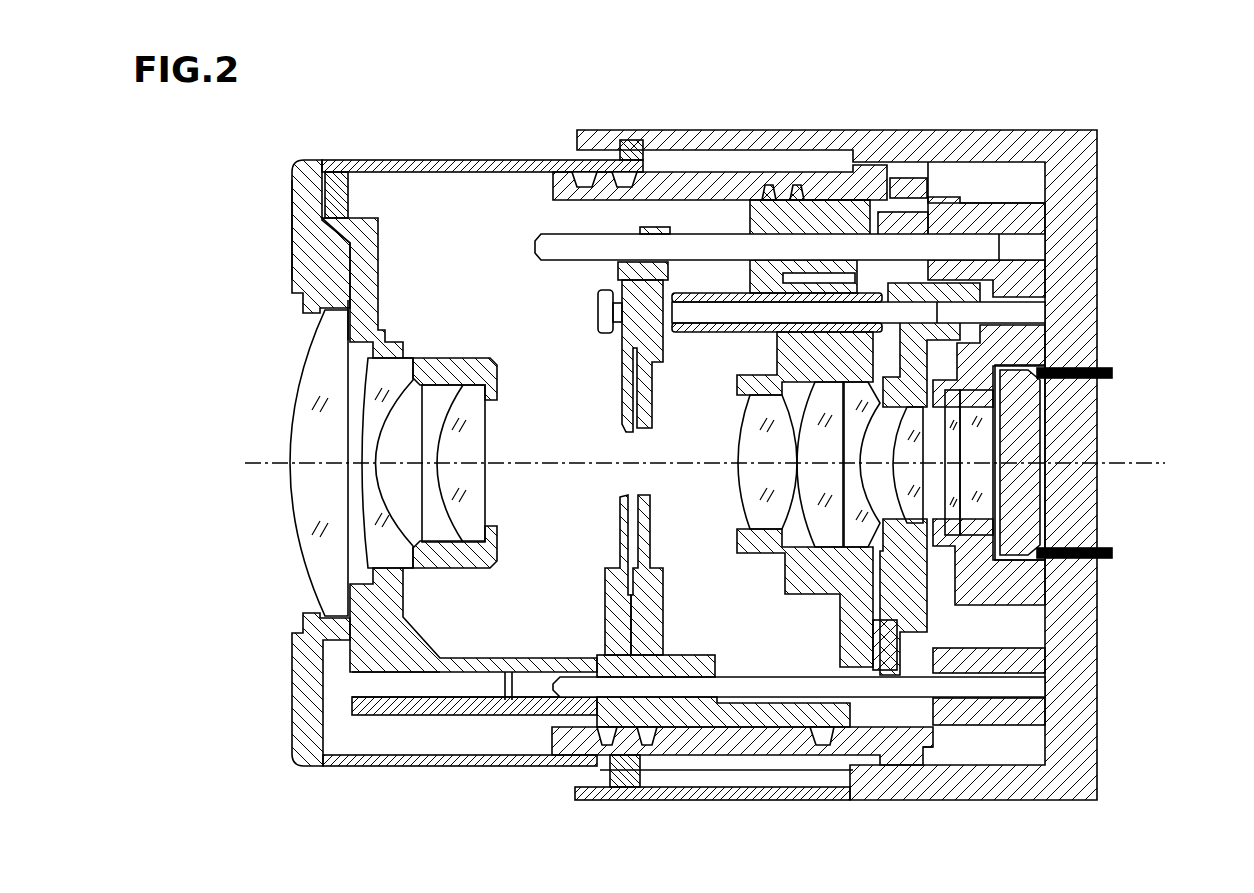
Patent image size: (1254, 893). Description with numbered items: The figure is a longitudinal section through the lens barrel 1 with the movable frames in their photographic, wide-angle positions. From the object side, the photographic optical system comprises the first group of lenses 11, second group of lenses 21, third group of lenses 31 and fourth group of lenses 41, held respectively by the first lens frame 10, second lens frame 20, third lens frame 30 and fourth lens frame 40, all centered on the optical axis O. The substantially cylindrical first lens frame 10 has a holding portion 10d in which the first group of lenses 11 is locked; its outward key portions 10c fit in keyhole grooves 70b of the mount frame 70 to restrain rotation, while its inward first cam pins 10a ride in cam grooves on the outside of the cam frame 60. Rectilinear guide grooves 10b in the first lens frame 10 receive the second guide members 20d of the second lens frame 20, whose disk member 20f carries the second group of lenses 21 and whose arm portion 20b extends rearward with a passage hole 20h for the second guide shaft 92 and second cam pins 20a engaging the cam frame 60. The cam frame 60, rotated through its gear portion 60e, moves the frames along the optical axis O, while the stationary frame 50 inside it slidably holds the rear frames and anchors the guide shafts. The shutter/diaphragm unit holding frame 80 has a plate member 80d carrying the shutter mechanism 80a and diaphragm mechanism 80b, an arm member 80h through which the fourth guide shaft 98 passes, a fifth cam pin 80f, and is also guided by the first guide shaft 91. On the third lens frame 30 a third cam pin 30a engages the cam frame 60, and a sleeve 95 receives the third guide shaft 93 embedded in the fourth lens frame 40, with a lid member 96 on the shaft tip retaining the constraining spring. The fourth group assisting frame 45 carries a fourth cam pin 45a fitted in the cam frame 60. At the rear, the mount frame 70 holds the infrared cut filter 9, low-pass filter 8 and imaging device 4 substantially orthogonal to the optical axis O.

The lens barrel 1 is at (1132, 131).
The imaging device 4 is at (1030, 446).
The low-pass filter 8 is at (985, 440).
The infrared cut filter 9 is at (1020, 385).
The first lens frame 10 is at (294, 208).
The first cam pins 10a is at (592, 185).
The rectilinear guide grooves 10b is at (432, 168).
The key portions 10c is at (626, 158).
The holding portion 10d is at (296, 230).
The first group of lenses 11 is at (315, 548).
The second lens frame 20 is at (482, 572).
The second cam pins 20a is at (614, 742).
The arm portion 20b is at (475, 706).
The second guide members 20d is at (337, 178).
The disk member 20f is at (340, 330).
The passage hole 20h is at (385, 686).
The second group of lenses 21 is at (470, 400).
The third lens frame 30 is at (752, 218).
The third cam pin 30a is at (790, 198).
The third group of lenses 31 is at (775, 535).
The fourth lens frame 40 is at (970, 605).
The fourth group of lenses 41 is at (895, 626).
The fourth group assisting frame 45 is at (880, 216).
The fourth cam pin 45a is at (845, 218).
The stationary frame 50 is at (1045, 212).
The cam frame 60 is at (562, 188).
The gear portion 60e is at (942, 180).
The mount frame 70 is at (1060, 138).
The keyhole grooves 70b is at (735, 148).
The shutter/diaphragm unit holding frame 80 is at (614, 268).
The shutter mechanism 80a is at (622, 586).
The diaphragm mechanism 80b is at (656, 572).
The plate member 80d is at (688, 705).
The arm member 80h is at (760, 715).
The fifth cam pin 80f is at (822, 742).
The first guide shaft 91 is at (1030, 250).
The second guide shaft 92 is at (530, 684).
The third guide shaft 93 is at (975, 313).
The sleeve 95 is at (700, 334).
The lid member 96 is at (600, 318).
The fourth guide shaft 98 is at (1040, 690).
The optical axis O is at (265, 470).